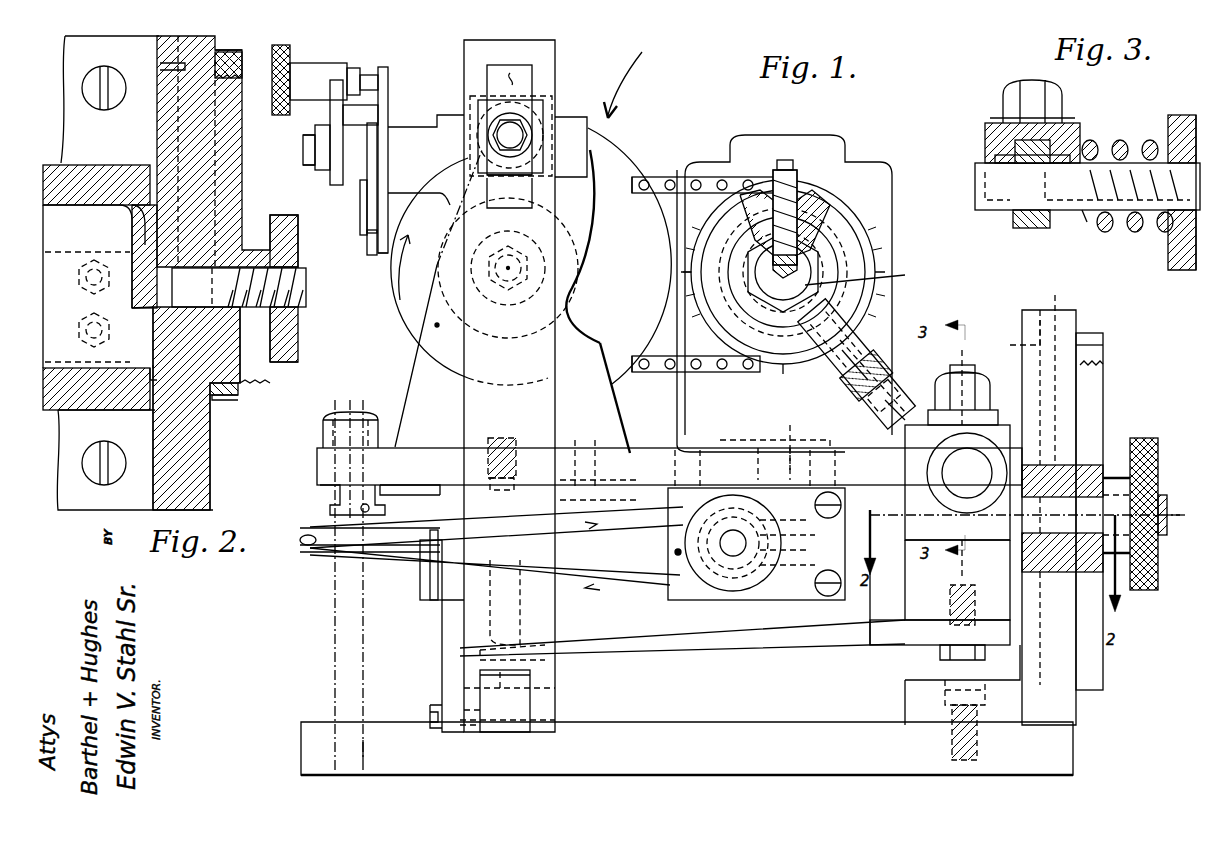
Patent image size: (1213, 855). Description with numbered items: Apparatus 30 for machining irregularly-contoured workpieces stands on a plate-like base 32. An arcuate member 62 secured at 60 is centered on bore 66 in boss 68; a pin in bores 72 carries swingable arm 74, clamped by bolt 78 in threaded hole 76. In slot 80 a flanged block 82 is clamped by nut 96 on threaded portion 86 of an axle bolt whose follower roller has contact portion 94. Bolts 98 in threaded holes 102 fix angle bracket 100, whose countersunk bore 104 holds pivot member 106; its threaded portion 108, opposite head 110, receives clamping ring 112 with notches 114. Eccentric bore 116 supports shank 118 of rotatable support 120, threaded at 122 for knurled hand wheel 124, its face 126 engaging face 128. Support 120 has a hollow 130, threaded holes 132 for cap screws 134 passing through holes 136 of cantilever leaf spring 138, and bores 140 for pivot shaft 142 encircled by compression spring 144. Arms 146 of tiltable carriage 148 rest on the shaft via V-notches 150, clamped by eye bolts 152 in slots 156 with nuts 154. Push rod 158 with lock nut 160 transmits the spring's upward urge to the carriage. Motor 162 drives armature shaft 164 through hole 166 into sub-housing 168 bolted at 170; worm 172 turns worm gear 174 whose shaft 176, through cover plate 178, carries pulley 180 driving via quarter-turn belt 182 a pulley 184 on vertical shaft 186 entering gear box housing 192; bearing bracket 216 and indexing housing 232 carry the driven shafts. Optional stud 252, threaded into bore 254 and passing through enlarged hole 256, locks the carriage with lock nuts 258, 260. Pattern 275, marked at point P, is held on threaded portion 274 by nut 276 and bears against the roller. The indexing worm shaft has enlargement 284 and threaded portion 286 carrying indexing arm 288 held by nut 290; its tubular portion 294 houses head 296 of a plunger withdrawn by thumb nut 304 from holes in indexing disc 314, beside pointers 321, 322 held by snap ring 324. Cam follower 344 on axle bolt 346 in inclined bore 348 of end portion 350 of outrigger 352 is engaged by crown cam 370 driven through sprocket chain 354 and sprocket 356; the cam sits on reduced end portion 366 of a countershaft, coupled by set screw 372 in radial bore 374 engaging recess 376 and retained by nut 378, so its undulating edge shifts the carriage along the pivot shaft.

In FIG. 1, the apparatus 30 is at (629, 75).
In FIG. 1, the base 32 is at (301, 742).
In FIG. 1, the fastening 60 is at (440, 702).
In FIG. 1, the arcuate member 62 is at (452, 641).
In FIG. 1, the bore 66 is at (510, 732).
In FIG. 1, the boss 68 is at (490, 732).
In FIG. 1, the aligned bores 72 is at (464, 680).
In FIG. 1, the swingable arm 74 is at (464, 397).
In FIG. 1, the transverse threaded hole 76 is at (482, 585).
In FIG. 1, the clamping bolt 78 is at (422, 580).
In FIG. 1, the vertical slot 80 is at (490, 80).
In FIG. 1, the flanged block 82 is at (545, 105).
In FIG. 1, the reduced diameter threaded portion 86 is at (520, 135).
In FIG. 1, the cylindrical contact portion 94 is at (513, 77).
In FIG. 1, the nut 96 is at (548, 143).
In FIG. 2, the bolts 98 is at (96, 76).
In FIG. 1, the bolts 98 is at (940, 682).
In FIG. 2, the upstanding angle bracket 100 is at (210, 488).
In FIG. 1, the upstanding angle bracket 100 is at (1037, 312).
In FIG. 1, the threaded holes 102 is at (952, 745).
In FIG. 2, the countersunk bore 104 is at (190, 40).
In FIG. 1, the countersunk bore 104 is at (1076, 374).
In FIG. 2, the pivot member 106 is at (232, 150).
In FIG. 1, the pivot member 106 is at (1103, 465).
In FIG. 2, the threaded portion 108 is at (272, 380).
In FIG. 1, the threaded portion 108 is at (1100, 380).
In FIG. 2, the notch 110 is at (160, 68).
In FIG. 1, the notch 110 is at (1020, 333).
In FIG. 2, the clamping ring 112 is at (252, 66).
In FIG. 1, the clamping ring 112 is at (1090, 333).
In FIG. 2, the peripheral notches 114 is at (235, 48).
In FIG. 1, the peripheral notches 114 is at (1104, 345).
In FIG. 2, the bore 116 is at (230, 250).
In FIG. 1, the bore 116 is at (1060, 465).
In FIG. 2, the rod-like shank 118 is at (239, 287).
In FIG. 1, the rod-like shank 118 is at (1062, 542).
In FIG. 2, the rotatable support 120 is at (75, 165).
In FIG. 3, the rotatable support 120 is at (1170, 255).
In FIG. 1, the rotatable support 120 is at (915, 608).
In FIG. 2, the threaded end portion 122 is at (256, 345).
In FIG. 1, the threaded end portion 122 is at (1163, 495).
In FIG. 2, the knurled hand wheel 124 is at (292, 365).
In FIG. 1, the knurled hand wheel 124 is at (1143, 438).
In FIG. 2, the abutment face 126 is at (132, 180).
In FIG. 2, the face 128 is at (157, 140).
In FIG. 2, the hollow 130 is at (95, 225).
In FIG. 1, the hollow 130 is at (935, 570).
In FIG. 1, the vertical threaded holes 132 is at (950, 588).
In FIG. 2, the cap screws 134 is at (82, 332).
In FIG. 1, the cap screws 134 is at (990, 650).
In FIG. 1, the holes 136 is at (948, 633).
In FIG. 2, the leaf spring 138 is at (72, 412).
In FIG. 1, the leaf spring 138 is at (830, 640).
In FIG. 3, the aligned bores 140 is at (1180, 115).
In FIG. 3, the pivot shaft 142 is at (975, 190).
In FIG. 1, the pivot shaft 142 is at (980, 530).
In FIG. 3, the helical compression spring 144 is at (1105, 232).
In FIG. 3, the bifurcated arms 146 is at (1068, 140).
In FIG. 1, the bifurcated arms 146 is at (992, 420).
In FIG. 1, the tiltable carriage 148 is at (635, 447).
In FIG. 3, the V-notches 150 is at (995, 160).
In FIG. 1, the V-notches 150 is at (930, 495).
In FIG. 3, the eye bolts 152 is at (1032, 228).
In FIG. 1, the eye bolts 152 is at (955, 355).
In FIG. 3, the clamping nuts 154 is at (1012, 103).
In FIG. 1, the clamping nuts 154 is at (978, 365).
In FIG. 3, the vertical slots 156 is at (1020, 137).
In FIG. 1, the vertical slots 156 is at (488, 445).
In FIG. 1, the push rod 158 is at (590, 545).
In FIG. 1, the lock nut 160 is at (570, 496).
In FIG. 1, the vertical motor 162 is at (878, 162).
In FIG. 1, the armature shaft 164 is at (768, 432).
In FIG. 1, the hole 166 is at (750, 468).
In FIG. 1, the sub-housing 168 is at (815, 595).
In FIG. 1, the bolts 170 is at (670, 490).
In FIG. 1, the worm 172 is at (831, 544).
In FIG. 1, the worm gear 174 is at (735, 600).
In FIG. 1, the shaft 176 is at (733, 543).
In FIG. 1, the cover plate 178 is at (678, 552).
In FIG. 1, the pulley 180 is at (770, 598).
In FIG. 1, the quarter-turn belt 182 is at (650, 585).
In FIG. 1, the pulley 184 is at (306, 555).
In FIG. 1, the vertical shaft 186 is at (430, 495).
In FIG. 1, the gear box housing 192 is at (638, 177).
In FIG. 1, the bearing bracket 216 is at (395, 375).
In FIG. 1, the indexing housing 232 is at (640, 245).
In FIG. 1, the vertical stud 252 is at (335, 650).
In FIG. 1, the bore 254 is at (372, 745).
In FIG. 1, the enlarged hole 256 is at (330, 460).
In FIG. 1, the lock nut 258 is at (318, 437).
In FIG. 1, the lock nut 260 is at (320, 496).
In FIG. 1, the reduced diameter threaded portion 274 is at (500, 300).
In FIG. 1, the pattern 275 is at (395, 308).
In FIG. 1, the nut 276 is at (518, 235).
In FIG. 1, the enlargement 284 is at (352, 115).
In FIG. 1, the partially-threaded portion 286 is at (302, 165).
In FIG. 1, the indexing arm 288 is at (330, 117).
In FIG. 1, the nut 290 is at (313, 145).
In FIG. 1, the tubular portion 294 is at (315, 62).
In FIG. 1, the enlarged head 296 is at (348, 67).
In FIG. 1, the knurled thumb nut 304 is at (281, 45).
In FIG. 1, the indexing disc 314 is at (385, 66).
In FIG. 1, the pointer 321 is at (376, 250).
In FIG. 1, the pointer 322 is at (365, 235).
In FIG. 1, the snap ring 324 is at (360, 200).
In FIG. 1, the cam follower 344 is at (855, 320).
In FIG. 1, the headed axle bolt 346 is at (800, 300).
In FIG. 1, the inclined bore 348 is at (880, 335).
In FIG. 1, the upwardly-inclined end portion 350 is at (840, 368).
In FIG. 1, the outrigger 352 is at (875, 415).
In FIG. 1, the sprocket chain 354 is at (665, 177).
In FIG. 1, the sprocket 356 is at (720, 235).
In FIG. 1, the outer end portion 366 is at (780, 295).
In FIG. 1, the crown cam 370 is at (730, 322).
In FIG. 1, the set screw 372 is at (800, 180).
In FIG. 1, the radial bore 374 is at (770, 172).
In FIG. 1, the recess 376 is at (800, 265).
In FIG. 1, the retaining nut 378 is at (869, 271).
In FIG. 1, the point P is at (437, 325).